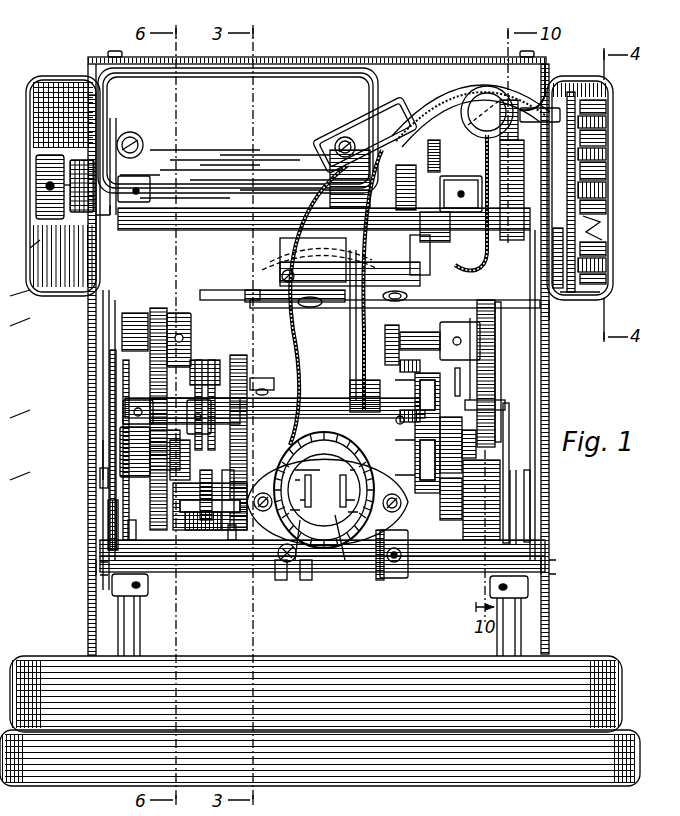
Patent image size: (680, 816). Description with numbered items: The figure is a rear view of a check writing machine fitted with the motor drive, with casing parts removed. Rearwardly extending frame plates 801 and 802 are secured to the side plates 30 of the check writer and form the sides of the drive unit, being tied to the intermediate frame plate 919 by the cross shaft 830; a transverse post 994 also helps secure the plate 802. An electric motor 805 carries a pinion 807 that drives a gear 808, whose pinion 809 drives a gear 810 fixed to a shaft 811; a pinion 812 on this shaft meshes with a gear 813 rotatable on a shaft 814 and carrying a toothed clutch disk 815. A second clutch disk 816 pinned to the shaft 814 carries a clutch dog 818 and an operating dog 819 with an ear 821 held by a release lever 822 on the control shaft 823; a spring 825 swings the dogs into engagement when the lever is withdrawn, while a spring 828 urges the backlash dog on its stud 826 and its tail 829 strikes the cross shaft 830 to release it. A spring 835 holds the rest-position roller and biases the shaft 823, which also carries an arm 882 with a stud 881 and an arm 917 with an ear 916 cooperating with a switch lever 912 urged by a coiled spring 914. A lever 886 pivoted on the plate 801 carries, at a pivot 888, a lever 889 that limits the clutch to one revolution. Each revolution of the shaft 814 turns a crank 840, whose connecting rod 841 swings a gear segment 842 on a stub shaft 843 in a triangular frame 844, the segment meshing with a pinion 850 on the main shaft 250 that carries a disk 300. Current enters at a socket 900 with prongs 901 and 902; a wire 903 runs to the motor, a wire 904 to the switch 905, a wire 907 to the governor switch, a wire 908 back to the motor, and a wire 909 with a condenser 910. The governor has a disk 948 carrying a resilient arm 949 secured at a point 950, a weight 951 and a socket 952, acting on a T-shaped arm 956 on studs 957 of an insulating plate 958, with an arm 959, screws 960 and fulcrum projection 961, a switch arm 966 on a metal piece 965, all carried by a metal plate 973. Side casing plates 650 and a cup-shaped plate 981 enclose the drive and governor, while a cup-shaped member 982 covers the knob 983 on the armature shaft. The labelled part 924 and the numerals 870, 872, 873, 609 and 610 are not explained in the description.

The electric motor 805 is at (238, 133).
The supplementary cup-shaped member 982 is at (30, 92).
The knob 983 is at (40, 207).
The housing part 872 is at (20, 247).
The housing part 870 is at (15, 293).
The housing part 873 is at (15, 323).
The housing part 609 is at (15, 415).
The housing part 610 is at (15, 477).
The frame plate 801 is at (112, 580).
The side plates 30 is at (520, 622).
The side casing plates 650 is at (556, 576).
The disk 948 is at (571, 92).
The metal piece 965 is at (606, 105).
The supplementary cup-shaped plate 981 is at (606, 122).
The securing point of resilient arm 950 is at (606, 138).
The metal plate 973 is at (606, 155).
The resilient metal switch arm 966 is at (606, 172).
The metal socket 952 is at (606, 192).
The second arm 959 is at (606, 210).
The projection 961 is at (602, 238).
The headed studs 957 is at (606, 250).
The screws 960 is at (606, 266).
The T-shaped arm 956 is at (598, 282).
The fixed insulating plate 958 is at (596, 292).
The resilient arm 949 is at (558, 290).
The weight 951 is at (549, 318).
The wire 907 is at (436, 90).
The condenser 910 is at (484, 92).
The wire 909 is at (540, 62).
The wire 908 is at (390, 105).
The fixed transverse post 994 is at (480, 118).
The pinion 807 is at (436, 150).
The pinion 809 is at (446, 176).
The wire 903 is at (280, 258).
The arc guide 924 is at (318, 246).
The switch 905 is at (330, 250).
The wire 904 is at (395, 290).
The lever 912 is at (370, 318).
The pinion 812 is at (150, 313).
The shaft 811 is at (190, 318).
The release lever 822 is at (230, 292).
The clutch dog 818 is at (198, 360).
The operating dog 819 is at (212, 360).
The stud 881 is at (110, 345).
The arm 882 is at (123, 376).
The gear 813 is at (150, 494).
The ear 821 is at (150, 406).
The spring 828 is at (150, 420).
The lever 889 is at (103, 452).
The spring 825 is at (150, 460).
The pivot 888 is at (100, 486).
The disk 300 is at (128, 516).
The lever 886 is at (108, 536).
The pinion 850 is at (430, 548).
The tail 829 is at (196, 530).
The stud 826 is at (206, 520).
The second clutch disk 816 is at (230, 530).
The clutch disk 815 is at (232, 540).
The socket 900 is at (310, 548).
The arm 917 is at (324, 490).
The male prong 901 is at (333, 545).
The male prong 902 is at (352, 540).
The shaft 814 is at (274, 565).
The frame plate 919 is at (380, 580).
The cross shaft 830 is at (470, 548).
The spring 835 is at (262, 392).
The control shaft 823 is at (305, 400).
The ear 916 is at (440, 338).
The gear 808 is at (495, 340).
The gear 810 is at (500, 350).
The triangular frame 844 is at (470, 365).
The stub shaft 843 is at (458, 396).
The coiled spring 914 is at (476, 444).
The connecting rod 841 is at (462, 500).
The crank 840 is at (500, 520).
The main shaft 250 is at (509, 520).
The gear segment 842 is at (530, 530).
The frame plate 802 is at (520, 545).